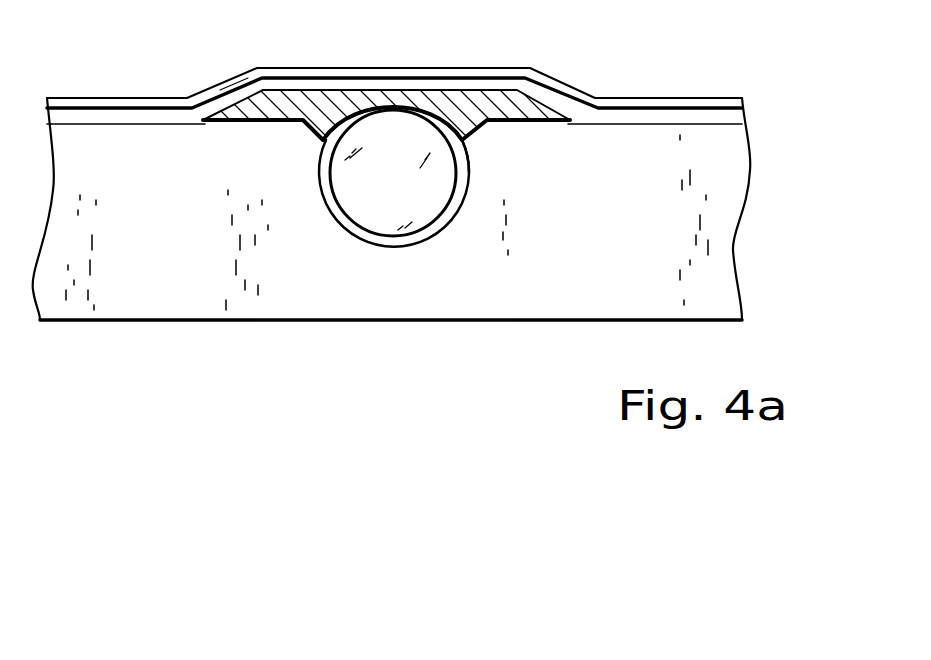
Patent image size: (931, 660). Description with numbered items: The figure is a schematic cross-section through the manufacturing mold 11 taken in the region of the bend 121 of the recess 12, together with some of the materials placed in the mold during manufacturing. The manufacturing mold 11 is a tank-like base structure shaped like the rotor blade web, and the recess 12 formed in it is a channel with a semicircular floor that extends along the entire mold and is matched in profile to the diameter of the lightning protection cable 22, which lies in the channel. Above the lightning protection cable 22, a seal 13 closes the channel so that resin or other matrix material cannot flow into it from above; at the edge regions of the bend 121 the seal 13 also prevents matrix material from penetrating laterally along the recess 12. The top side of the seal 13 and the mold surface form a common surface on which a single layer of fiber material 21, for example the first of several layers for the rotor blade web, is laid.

The manufacturing mold 11 is at (183, 272).
The recess 12 is at (470, 200).
The bend 121 is at (462, 165).
The seal 13 is at (308, 104).
The fiber material 21 is at (186, 103).
The lightning protection cable 22 is at (372, 192).